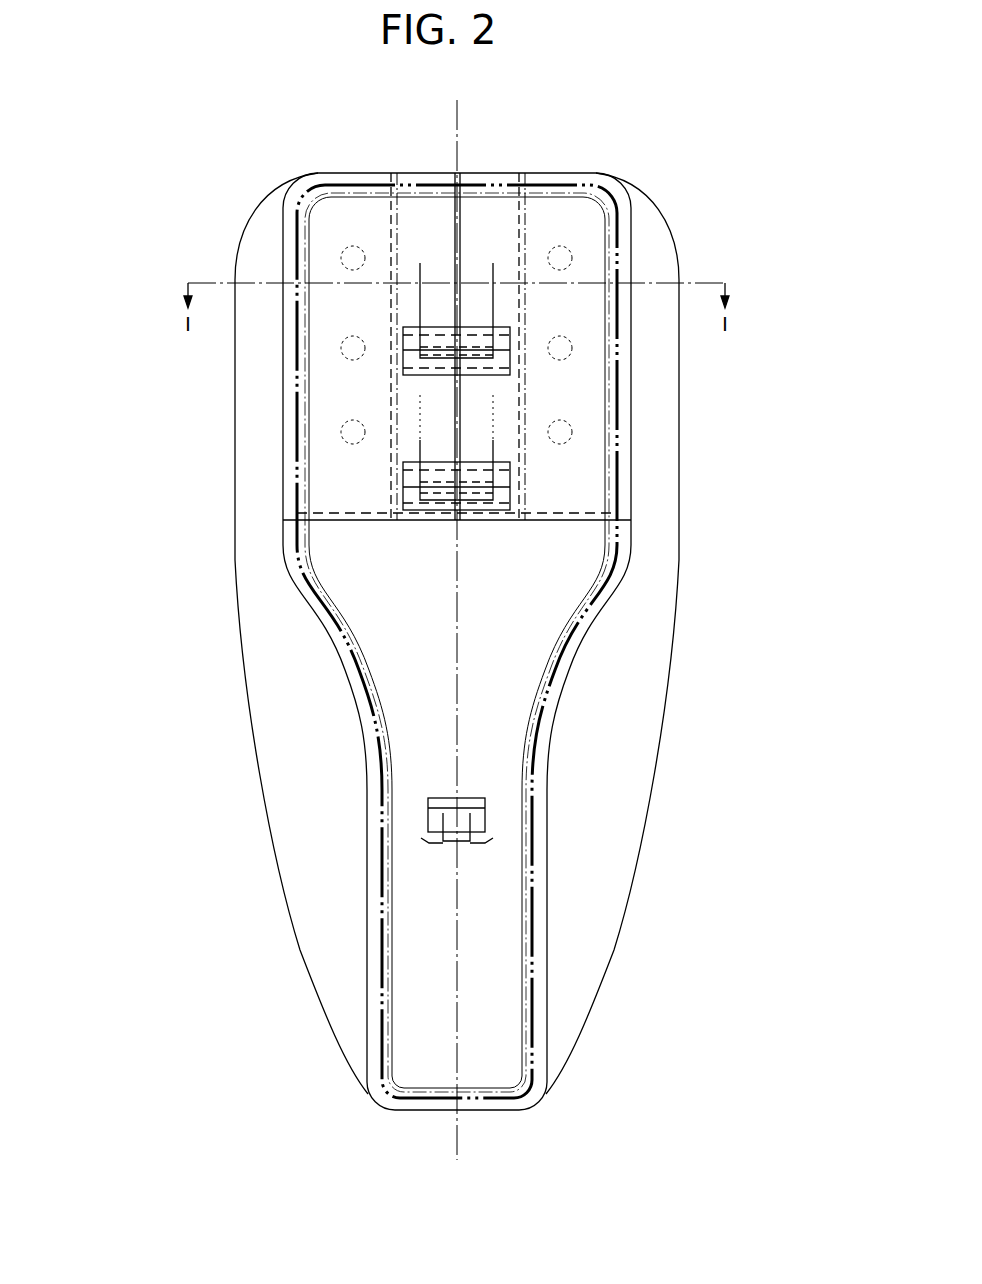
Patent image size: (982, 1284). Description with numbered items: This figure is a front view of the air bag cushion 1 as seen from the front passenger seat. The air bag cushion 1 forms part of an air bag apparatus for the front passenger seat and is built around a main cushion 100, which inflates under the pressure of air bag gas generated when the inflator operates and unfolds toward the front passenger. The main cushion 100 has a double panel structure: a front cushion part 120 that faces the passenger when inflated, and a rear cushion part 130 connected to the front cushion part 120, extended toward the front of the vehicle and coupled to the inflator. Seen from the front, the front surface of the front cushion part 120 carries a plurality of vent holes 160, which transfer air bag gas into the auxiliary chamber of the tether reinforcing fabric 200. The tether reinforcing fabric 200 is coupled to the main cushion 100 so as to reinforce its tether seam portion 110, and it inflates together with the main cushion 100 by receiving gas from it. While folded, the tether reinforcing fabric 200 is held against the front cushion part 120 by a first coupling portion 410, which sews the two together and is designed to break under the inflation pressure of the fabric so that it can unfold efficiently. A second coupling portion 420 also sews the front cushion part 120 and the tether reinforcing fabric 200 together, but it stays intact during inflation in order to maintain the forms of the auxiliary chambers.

The air bag cushion 1 is at (203, 548).
The main cushion 100 is at (248, 805).
The tether seam portion 110 is at (477, 347).
The front cushion part 120 is at (632, 482).
The rear cushion part 130 is at (625, 772).
The vent holes 160 is at (350, 257).
The tether reinforcing fabric 200 is at (618, 438).
The first coupling portion 410 is at (420, 306).
The second coupling portion 420 is at (397, 242).